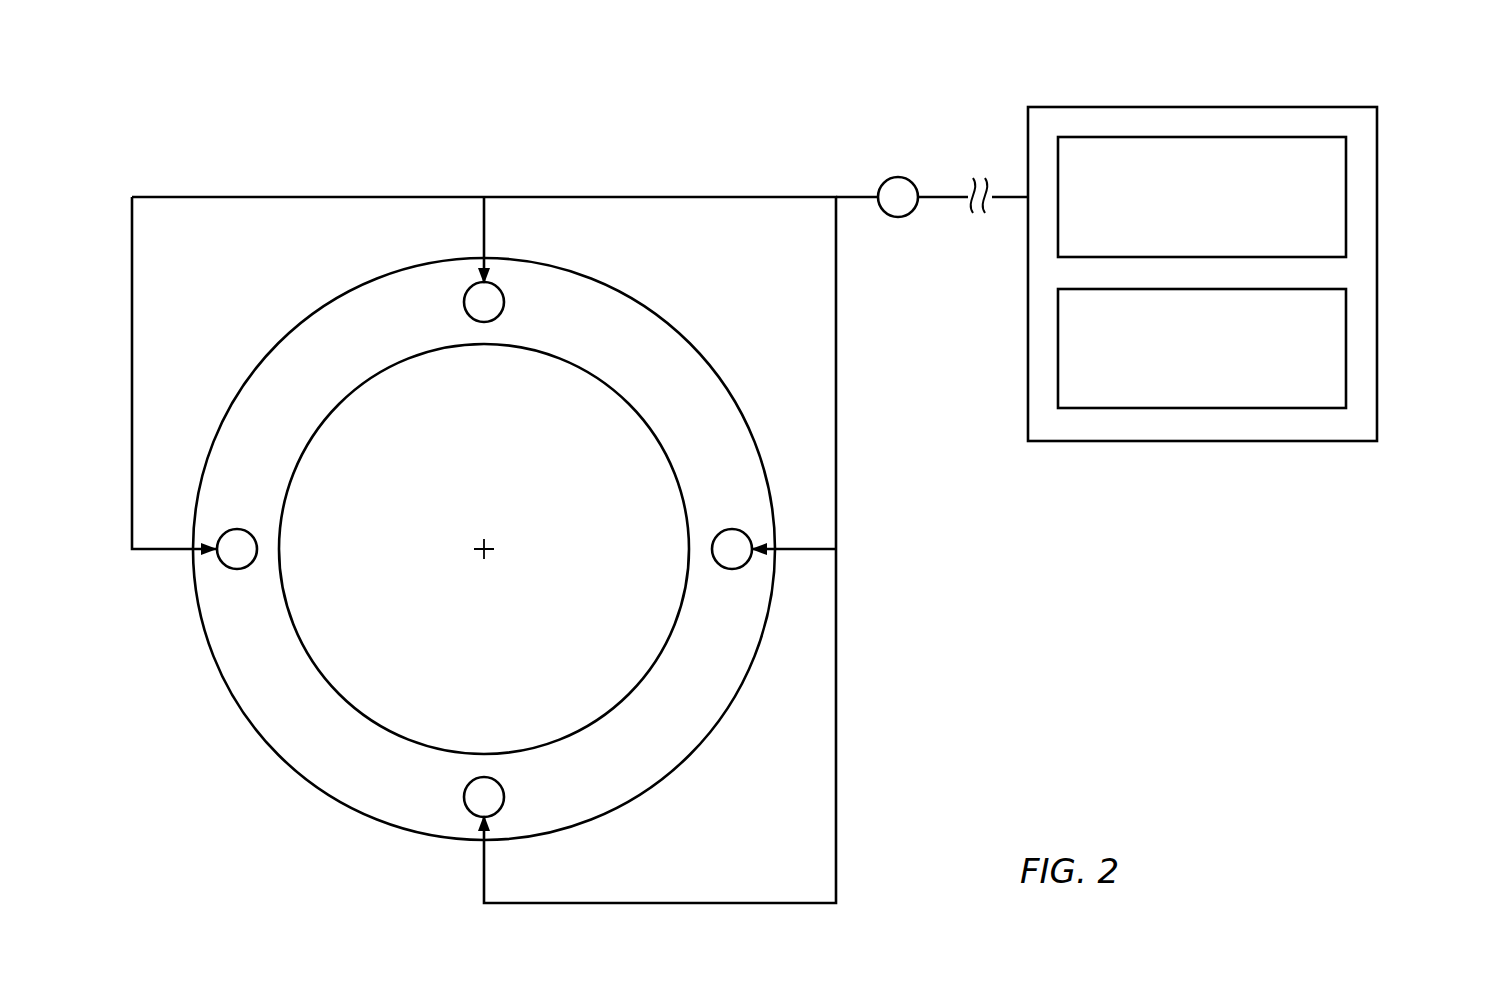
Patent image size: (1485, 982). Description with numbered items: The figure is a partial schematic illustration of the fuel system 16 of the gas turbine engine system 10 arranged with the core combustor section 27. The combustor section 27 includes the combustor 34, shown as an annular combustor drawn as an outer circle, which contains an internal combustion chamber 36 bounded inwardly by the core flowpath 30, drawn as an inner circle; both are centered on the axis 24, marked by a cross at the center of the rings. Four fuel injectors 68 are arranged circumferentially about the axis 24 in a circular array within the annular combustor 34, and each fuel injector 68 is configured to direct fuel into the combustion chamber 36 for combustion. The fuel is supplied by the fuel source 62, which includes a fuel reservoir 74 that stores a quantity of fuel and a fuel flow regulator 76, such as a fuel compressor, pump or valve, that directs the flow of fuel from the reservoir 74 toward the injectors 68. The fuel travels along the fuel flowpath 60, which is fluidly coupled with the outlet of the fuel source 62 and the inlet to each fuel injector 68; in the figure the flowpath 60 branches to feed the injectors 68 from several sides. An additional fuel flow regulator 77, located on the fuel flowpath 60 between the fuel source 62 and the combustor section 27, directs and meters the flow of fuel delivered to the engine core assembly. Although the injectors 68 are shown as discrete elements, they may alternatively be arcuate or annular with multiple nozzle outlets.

The gas turbine engine system 10 is at (158, 128).
The fuel system 16 is at (1293, 91).
The axis 24 is at (486, 553).
The core combustor section 27 is at (626, 247).
The core flowpath 30 is at (704, 409).
The combustor 34 is at (682, 316).
The combustion chamber 36 is at (634, 373).
The fuel flowpath 60 is at (768, 197).
The fuel source 62 is at (1377, 180).
The fuel injectors 68 is at (484, 322).
The fuel reservoir 74 is at (1188, 378).
The fuel flow regulator 76 is at (1188, 228).
The additional fuel flow regulator 77 is at (898, 177).